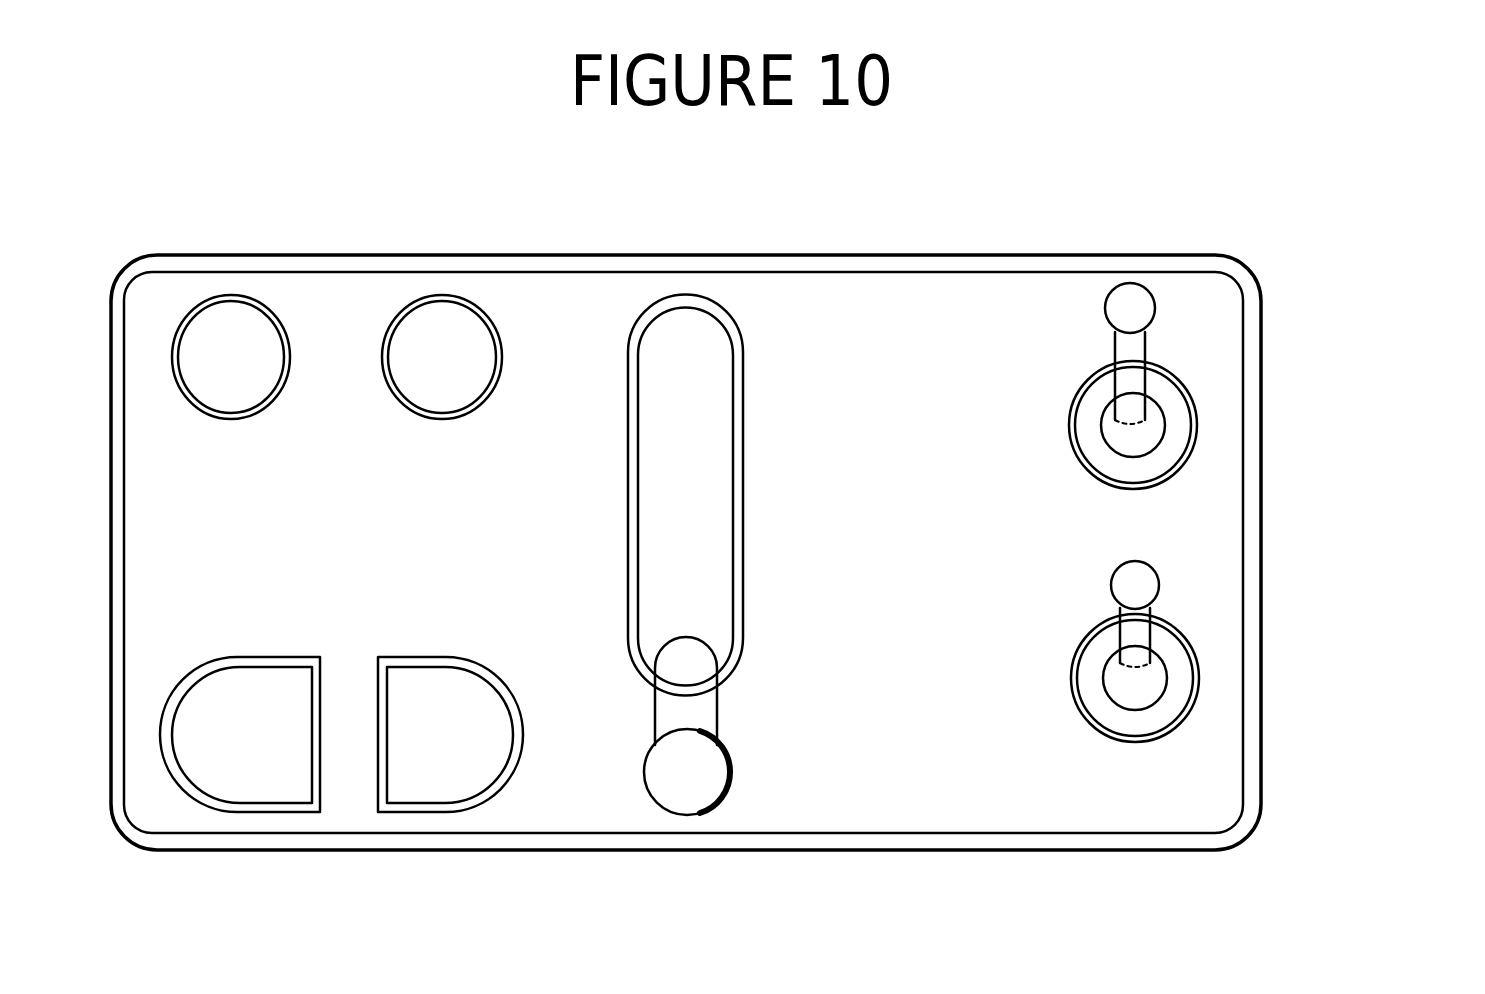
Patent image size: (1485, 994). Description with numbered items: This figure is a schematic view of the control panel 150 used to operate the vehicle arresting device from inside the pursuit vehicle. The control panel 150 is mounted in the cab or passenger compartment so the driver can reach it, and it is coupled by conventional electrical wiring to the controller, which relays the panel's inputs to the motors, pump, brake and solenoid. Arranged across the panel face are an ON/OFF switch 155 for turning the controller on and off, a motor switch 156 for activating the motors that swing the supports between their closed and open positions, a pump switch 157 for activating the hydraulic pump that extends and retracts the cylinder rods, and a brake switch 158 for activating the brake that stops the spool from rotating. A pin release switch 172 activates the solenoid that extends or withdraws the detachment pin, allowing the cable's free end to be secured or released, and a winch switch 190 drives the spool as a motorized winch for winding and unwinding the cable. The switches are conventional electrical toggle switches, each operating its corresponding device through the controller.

The control panel 150 is at (1062, 255).
The ON/OFF switch 155 is at (216, 379).
The motor switch 156 is at (420, 380).
The pump switch 157 is at (707, 713).
The pin release switch 172 is at (447, 772).
The winch switch 190 is at (1157, 423).
The brake switch 158 is at (1165, 675).